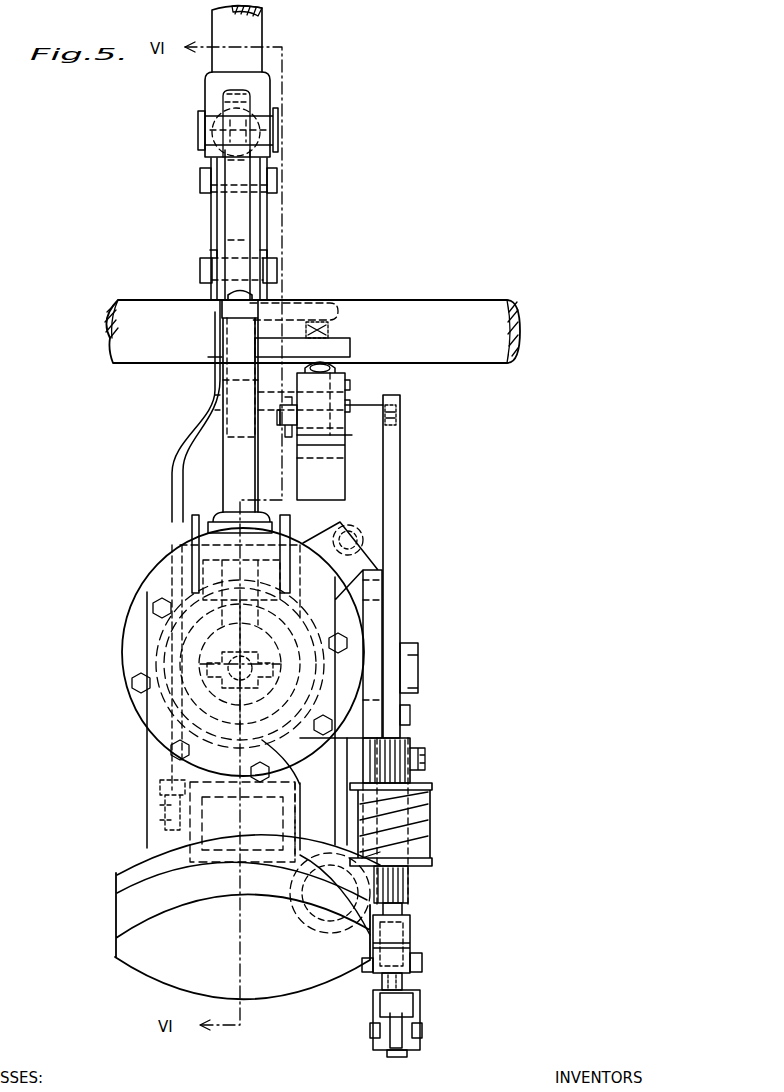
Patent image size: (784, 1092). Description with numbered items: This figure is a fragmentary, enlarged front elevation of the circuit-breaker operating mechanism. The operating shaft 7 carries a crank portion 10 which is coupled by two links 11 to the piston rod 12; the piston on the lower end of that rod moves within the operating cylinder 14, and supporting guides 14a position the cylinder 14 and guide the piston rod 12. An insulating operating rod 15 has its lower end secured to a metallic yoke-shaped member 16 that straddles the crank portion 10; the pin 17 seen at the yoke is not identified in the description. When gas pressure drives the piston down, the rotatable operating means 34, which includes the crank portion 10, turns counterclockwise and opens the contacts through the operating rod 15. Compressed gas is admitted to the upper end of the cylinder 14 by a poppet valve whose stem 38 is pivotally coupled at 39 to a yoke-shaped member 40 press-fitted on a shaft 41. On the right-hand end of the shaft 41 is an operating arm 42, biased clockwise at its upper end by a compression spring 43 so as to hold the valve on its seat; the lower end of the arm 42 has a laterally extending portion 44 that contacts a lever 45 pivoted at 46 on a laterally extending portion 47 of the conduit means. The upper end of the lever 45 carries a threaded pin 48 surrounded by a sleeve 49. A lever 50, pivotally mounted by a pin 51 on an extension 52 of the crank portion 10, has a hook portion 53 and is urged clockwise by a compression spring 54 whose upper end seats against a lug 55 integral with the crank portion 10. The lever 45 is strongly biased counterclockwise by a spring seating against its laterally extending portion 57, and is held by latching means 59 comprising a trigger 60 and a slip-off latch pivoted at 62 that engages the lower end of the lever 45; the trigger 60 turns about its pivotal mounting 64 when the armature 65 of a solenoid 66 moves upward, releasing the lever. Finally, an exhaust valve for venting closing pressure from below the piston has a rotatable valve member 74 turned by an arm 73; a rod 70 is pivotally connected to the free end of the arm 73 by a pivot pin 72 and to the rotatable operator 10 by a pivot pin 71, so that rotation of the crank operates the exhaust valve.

The operating shaft 7 is at (448, 300).
The crank portion 10 is at (248, 208).
The links 11 is at (211, 226).
The piston rod 12 is at (223, 478).
The operating cylinder 14 is at (147, 775).
The supporting guides 14a is at (192, 530).
The insulating operating rod 15 is at (265, 24).
The yoke-shaped member 16 is at (270, 88).
The pin 17 is at (280, 120).
The rotatable operating means 34 is at (193, 389).
The stem 38 is at (240, 669).
The pivotal coupling 39 is at (274, 665).
The yoke-shaped member 40 is at (272, 650).
The shaft 41 is at (384, 598).
The operating arm 42 is at (400, 708).
The compression spring 43 is at (350, 525).
The laterally extending portion 44 is at (432, 812).
The lever 45 is at (400, 494).
The stationary pivot 46 is at (420, 650).
The laterally extending portion 47 is at (405, 724).
The pin 48 is at (400, 428).
The sleeve 49 is at (352, 436).
The lever 50 is at (297, 486).
The pin 51 is at (350, 400).
The extension 52 is at (290, 437).
The hook portion 53 is at (276, 437).
The compression spring 54 is at (330, 330).
The lug 55 is at (338, 306).
The laterally extending portion 57 is at (318, 930).
The latching means 59 is at (456, 1041).
The trigger 60 is at (396, 1057).
The pivotal mounting 62 is at (424, 966).
The pivotal mounting 64 is at (370, 1031).
The armature 65 is at (412, 925).
The solenoid 66 is at (430, 840).
The rod 70 is at (183, 442).
The pivot pin 71 is at (200, 262).
The pivot pin 72 is at (250, 772).
The arm 73 is at (160, 810).
The rotatable valve member 74 is at (270, 800).